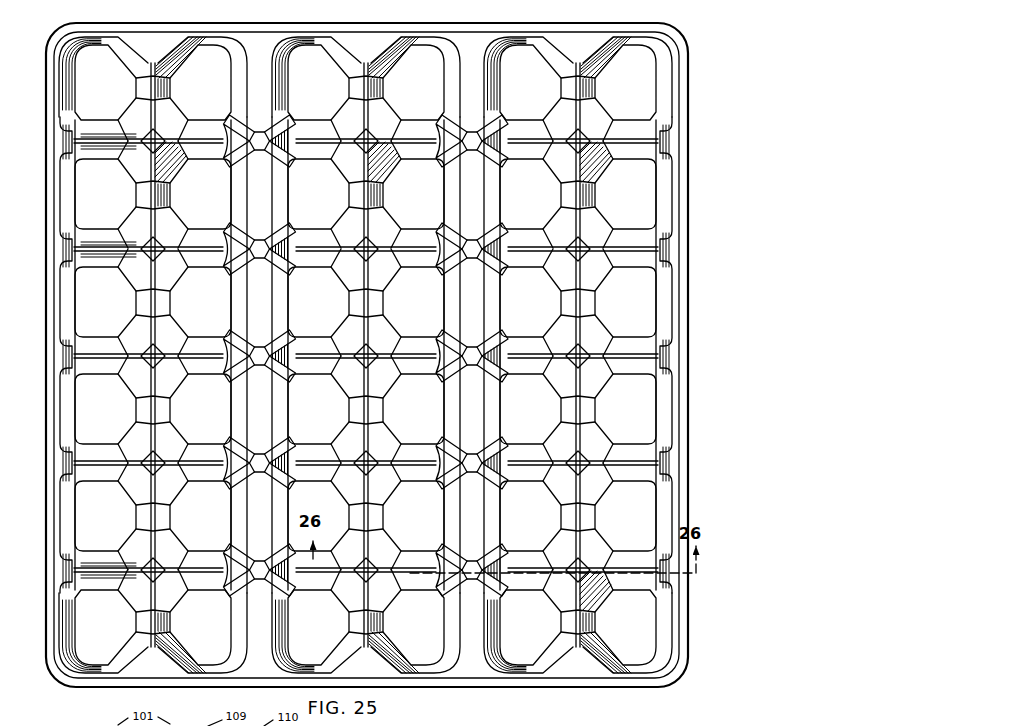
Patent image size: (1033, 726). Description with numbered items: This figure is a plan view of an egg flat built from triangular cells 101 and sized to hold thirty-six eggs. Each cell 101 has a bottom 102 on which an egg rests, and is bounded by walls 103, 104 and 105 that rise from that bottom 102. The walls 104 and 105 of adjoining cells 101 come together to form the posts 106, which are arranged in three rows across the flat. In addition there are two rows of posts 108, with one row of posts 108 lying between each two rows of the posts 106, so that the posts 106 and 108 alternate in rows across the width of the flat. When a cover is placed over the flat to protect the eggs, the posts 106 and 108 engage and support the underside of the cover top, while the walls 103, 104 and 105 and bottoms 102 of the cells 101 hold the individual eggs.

The cell 101 is at (175, 663).
The bottom 102 is at (365, 355).
The wall 103 is at (68, 617).
The wall 104 is at (365, 355).
The wall 105 is at (137, 537).
The post 106 is at (144, 556).
The post 108 is at (241, 565).